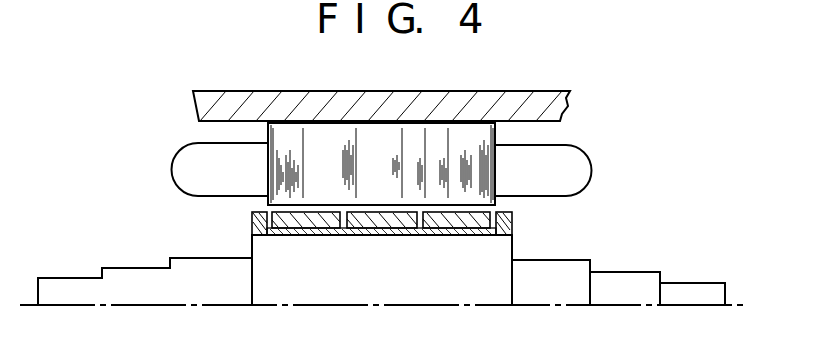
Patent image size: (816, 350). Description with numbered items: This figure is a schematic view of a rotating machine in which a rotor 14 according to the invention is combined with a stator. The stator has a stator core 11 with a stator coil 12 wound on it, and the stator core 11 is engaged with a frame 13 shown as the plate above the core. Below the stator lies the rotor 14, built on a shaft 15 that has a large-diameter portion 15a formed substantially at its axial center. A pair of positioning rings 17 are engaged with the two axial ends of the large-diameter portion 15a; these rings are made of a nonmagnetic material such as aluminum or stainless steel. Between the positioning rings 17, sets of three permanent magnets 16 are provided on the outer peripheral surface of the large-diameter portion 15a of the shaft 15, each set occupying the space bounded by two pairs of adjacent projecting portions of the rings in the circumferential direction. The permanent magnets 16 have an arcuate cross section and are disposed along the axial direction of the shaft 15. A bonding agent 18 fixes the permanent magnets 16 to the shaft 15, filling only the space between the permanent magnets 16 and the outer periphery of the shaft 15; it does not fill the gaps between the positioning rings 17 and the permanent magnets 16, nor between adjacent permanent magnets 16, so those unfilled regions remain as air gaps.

The stator core 11 is at (487, 138).
The stator coil 12 is at (590, 170).
The frame 13 is at (228, 100).
The rotor 14 is at (158, 260).
The shaft 15 is at (628, 292).
The large-diameter portion 15a is at (497, 246).
The permanent magnets 16 is at (392, 230).
The positioning rings 17 is at (252, 222).
The bonding agent 18 is at (318, 236).